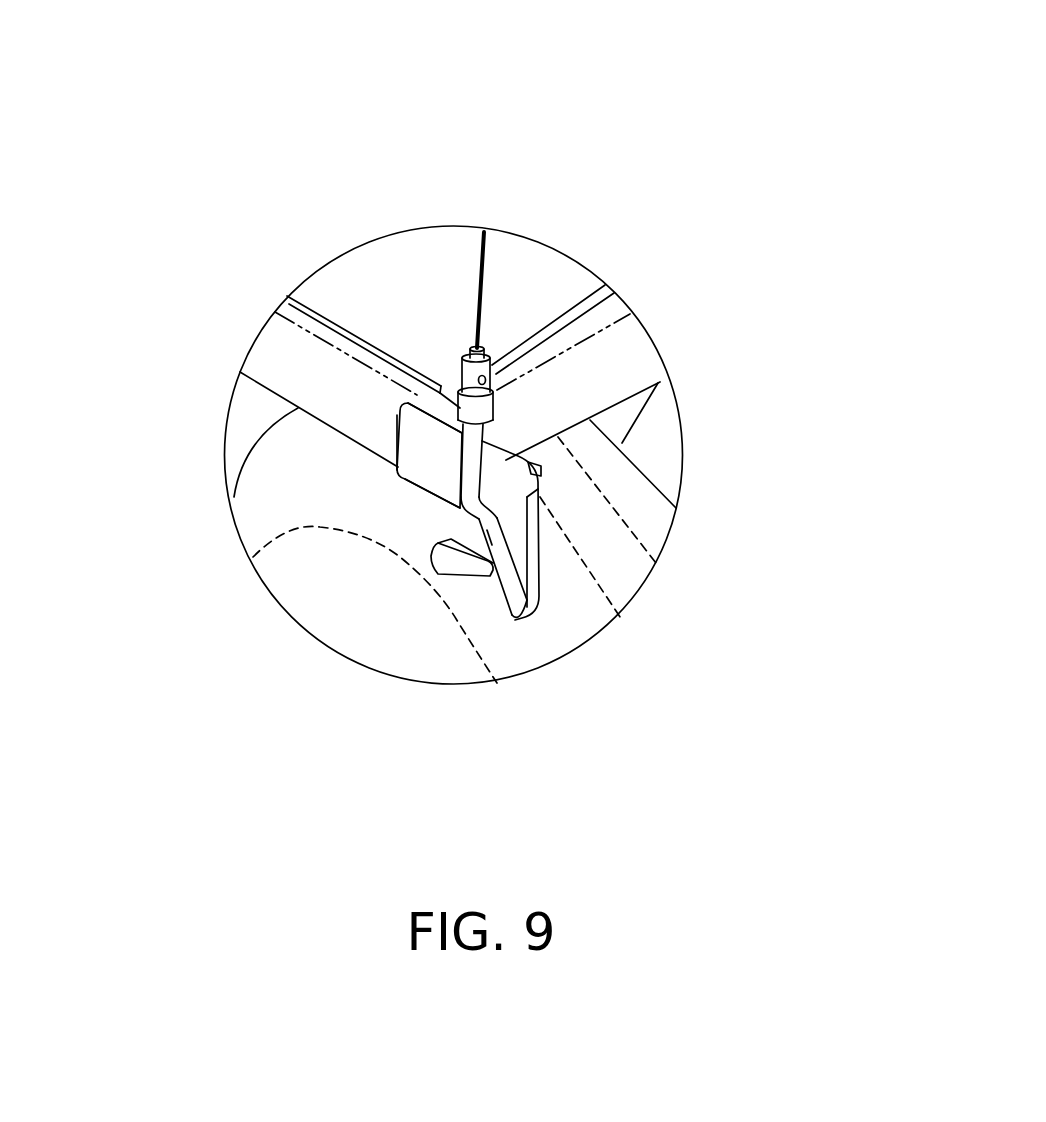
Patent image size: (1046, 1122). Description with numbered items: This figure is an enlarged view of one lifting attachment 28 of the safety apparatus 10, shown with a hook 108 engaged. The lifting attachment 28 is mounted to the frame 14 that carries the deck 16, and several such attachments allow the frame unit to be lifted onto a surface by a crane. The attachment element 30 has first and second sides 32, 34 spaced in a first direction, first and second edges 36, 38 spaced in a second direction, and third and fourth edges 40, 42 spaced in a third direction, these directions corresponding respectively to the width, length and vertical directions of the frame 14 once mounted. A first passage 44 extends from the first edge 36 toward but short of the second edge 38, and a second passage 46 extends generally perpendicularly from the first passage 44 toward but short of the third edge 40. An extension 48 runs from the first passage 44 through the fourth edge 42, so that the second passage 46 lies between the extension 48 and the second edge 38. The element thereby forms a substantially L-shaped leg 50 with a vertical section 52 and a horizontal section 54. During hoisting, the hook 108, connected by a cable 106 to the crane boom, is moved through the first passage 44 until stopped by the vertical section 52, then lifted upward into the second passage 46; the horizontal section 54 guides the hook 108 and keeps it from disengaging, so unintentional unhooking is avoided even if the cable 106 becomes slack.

The safety apparatus 10 is at (619, 164).
The frame 14 is at (278, 335).
The deck 16 is at (348, 287).
The lifting attachment 28 is at (398, 417).
The attachment element 30 is at (418, 455).
The first side 32 is at (432, 476).
The second side 34 is at (509, 436).
The first edge 36 is at (397, 447).
The second edge 38 is at (535, 552).
The third edge 40 is at (510, 460).
The fourth edge 42 is at (443, 573).
The first passage 44 is at (463, 537).
The second passage 46 is at (481, 545).
The extension 48 is at (445, 565).
The L-shaped leg 50 is at (513, 607).
The vertical section 52 is at (520, 568).
The horizontal section 54 is at (433, 555).
The cable 106 is at (482, 298).
The hook 108 is at (460, 410).